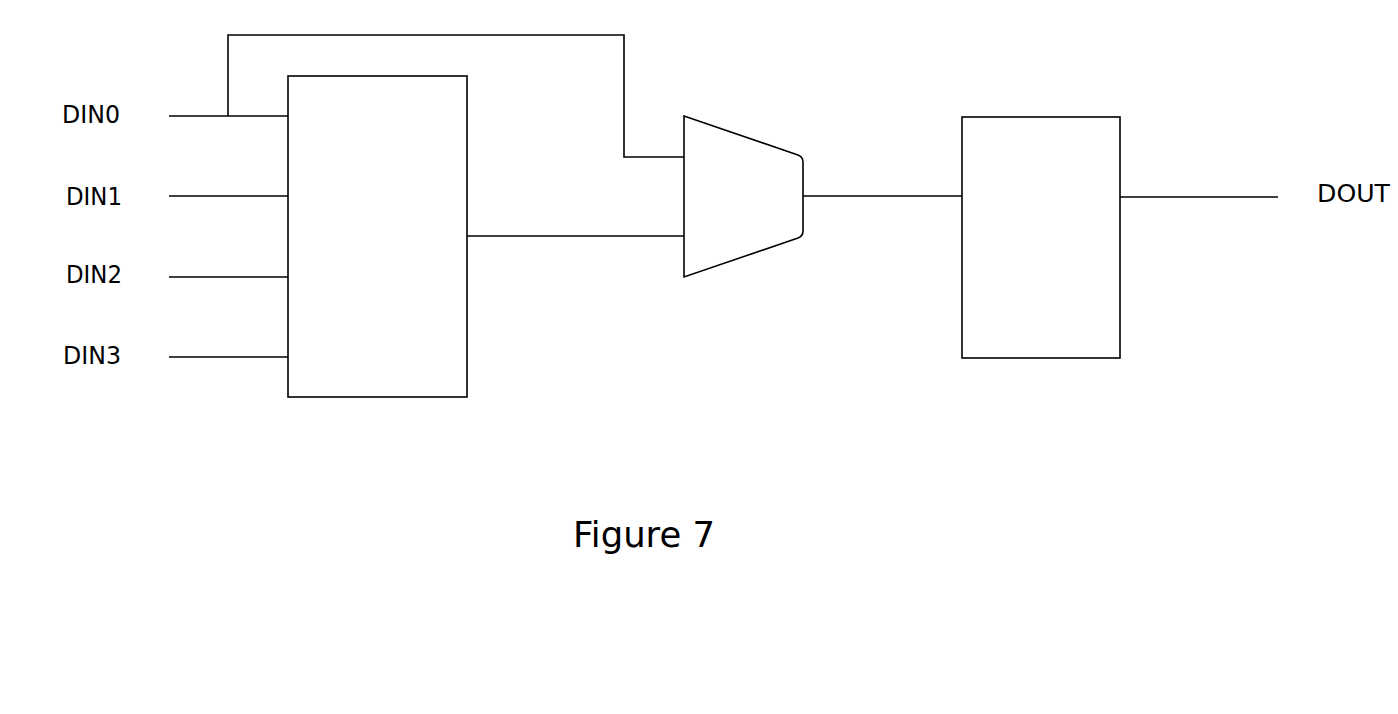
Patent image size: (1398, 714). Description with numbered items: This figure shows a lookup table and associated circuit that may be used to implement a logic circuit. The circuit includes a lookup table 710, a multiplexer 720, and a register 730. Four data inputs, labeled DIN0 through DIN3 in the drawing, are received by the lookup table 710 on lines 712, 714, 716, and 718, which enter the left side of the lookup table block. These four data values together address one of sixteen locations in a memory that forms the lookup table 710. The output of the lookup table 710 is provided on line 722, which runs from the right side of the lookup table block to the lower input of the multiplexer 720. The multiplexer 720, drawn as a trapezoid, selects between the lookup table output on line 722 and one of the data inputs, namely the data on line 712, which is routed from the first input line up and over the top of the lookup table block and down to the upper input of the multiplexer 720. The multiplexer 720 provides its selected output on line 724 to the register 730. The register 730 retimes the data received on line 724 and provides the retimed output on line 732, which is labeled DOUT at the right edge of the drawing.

The lookup table 710 is at (377, 236).
The data input line 712 is at (426, 96).
The data input line 714 is at (228, 212).
The data input line 716 is at (228, 295).
The data input line 718 is at (228, 374).
The multiplexer 720 is at (743, 196).
The lookup table output line 722 is at (575, 257).
The multiplexer output line 724 is at (882, 178).
The register 730 is at (1041, 237).
The register output line 732 is at (1199, 181).